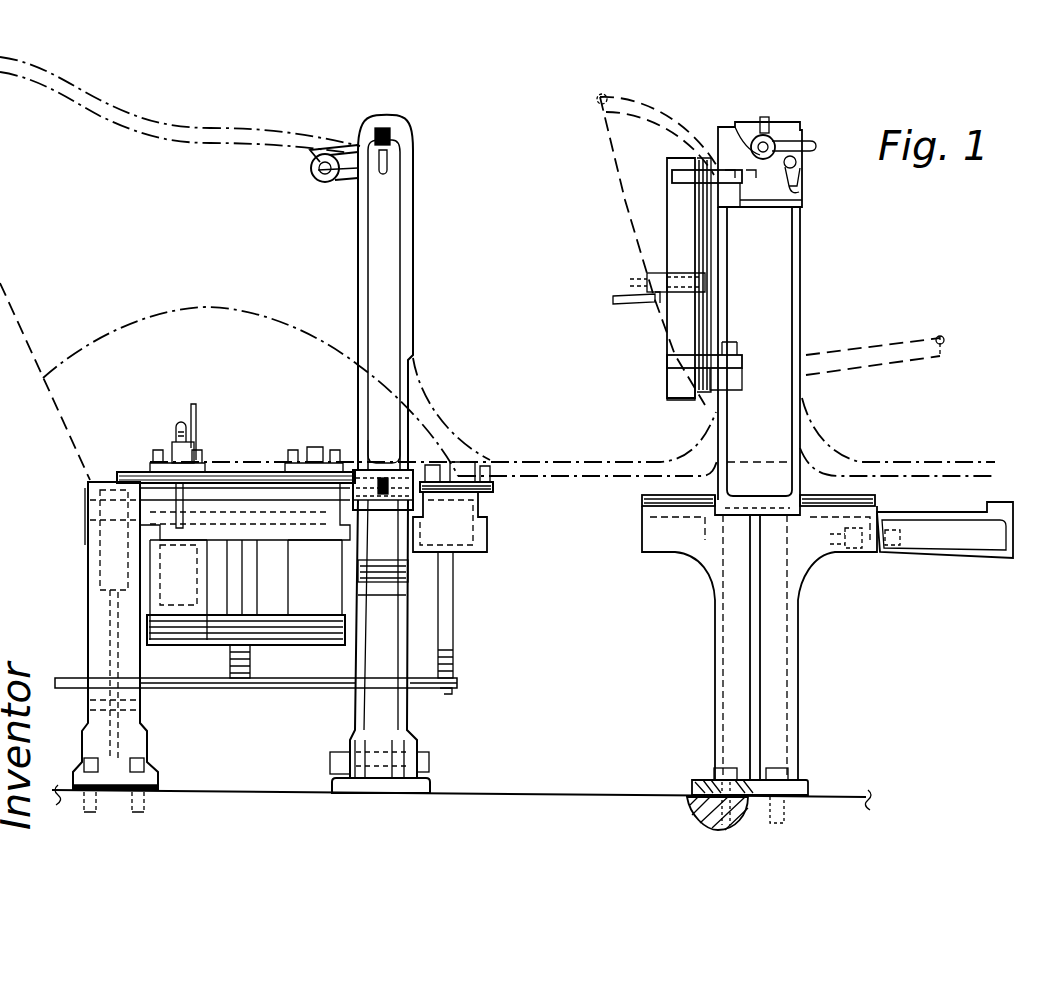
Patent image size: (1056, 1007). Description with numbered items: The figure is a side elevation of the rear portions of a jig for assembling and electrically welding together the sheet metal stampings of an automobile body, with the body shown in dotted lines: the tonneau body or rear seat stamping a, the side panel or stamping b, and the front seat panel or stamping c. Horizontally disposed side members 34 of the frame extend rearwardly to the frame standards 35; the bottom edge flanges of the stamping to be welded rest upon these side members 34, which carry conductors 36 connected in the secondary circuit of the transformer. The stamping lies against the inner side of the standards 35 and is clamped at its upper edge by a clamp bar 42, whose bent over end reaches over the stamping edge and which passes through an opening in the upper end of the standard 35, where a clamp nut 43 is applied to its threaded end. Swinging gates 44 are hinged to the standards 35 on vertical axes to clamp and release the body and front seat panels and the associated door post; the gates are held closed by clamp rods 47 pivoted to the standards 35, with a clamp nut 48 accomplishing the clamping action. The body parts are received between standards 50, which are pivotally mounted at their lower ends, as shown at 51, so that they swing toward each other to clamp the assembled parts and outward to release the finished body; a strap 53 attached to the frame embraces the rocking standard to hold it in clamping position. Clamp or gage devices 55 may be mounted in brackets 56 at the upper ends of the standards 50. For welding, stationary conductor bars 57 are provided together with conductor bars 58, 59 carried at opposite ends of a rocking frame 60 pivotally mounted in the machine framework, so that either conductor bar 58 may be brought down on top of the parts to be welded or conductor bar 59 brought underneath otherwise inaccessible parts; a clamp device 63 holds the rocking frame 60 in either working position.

The side members 34 is at (927, 522).
The frame standards 35 is at (760, 450).
The conductors 36 is at (684, 500).
The clamp bar 42 is at (770, 118).
The clamp nut 43 is at (740, 135).
The swinging gates 44 is at (676, 245).
The clamp rods 47 is at (646, 283).
The clamp nut 48 is at (652, 303).
The standards 50 is at (402, 322).
The pivot 51 is at (380, 793).
The strap 53 is at (356, 472).
The clamp or gage devices 55 is at (312, 172).
The brackets 56 is at (346, 180).
The stationary conductor bars 57 is at (490, 490).
The conductor bar 58 is at (258, 478).
The conductor bar 59 is at (300, 645).
The rocking frame 60 is at (178, 596).
The clamp device 63 is at (172, 442).
The tonneau body or rear seat stamping a is at (168, 137).
The side panel or stamping b is at (568, 468).
The front seat panel or stamping c is at (628, 212).